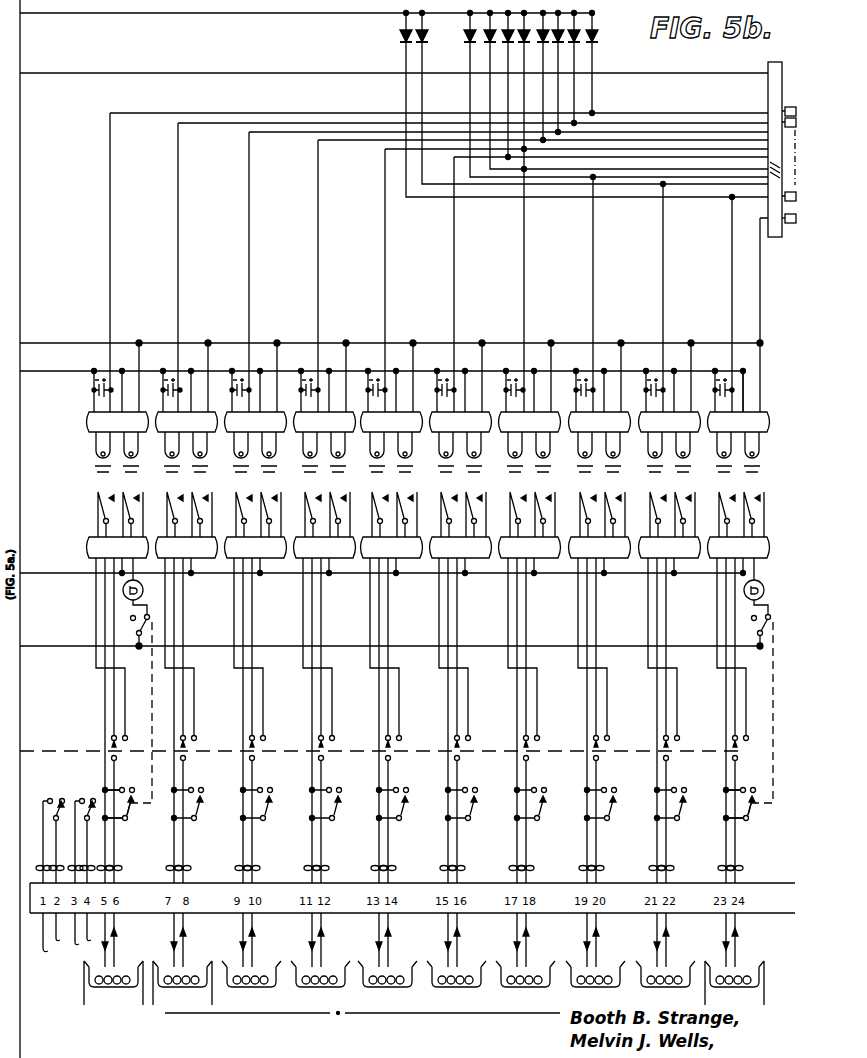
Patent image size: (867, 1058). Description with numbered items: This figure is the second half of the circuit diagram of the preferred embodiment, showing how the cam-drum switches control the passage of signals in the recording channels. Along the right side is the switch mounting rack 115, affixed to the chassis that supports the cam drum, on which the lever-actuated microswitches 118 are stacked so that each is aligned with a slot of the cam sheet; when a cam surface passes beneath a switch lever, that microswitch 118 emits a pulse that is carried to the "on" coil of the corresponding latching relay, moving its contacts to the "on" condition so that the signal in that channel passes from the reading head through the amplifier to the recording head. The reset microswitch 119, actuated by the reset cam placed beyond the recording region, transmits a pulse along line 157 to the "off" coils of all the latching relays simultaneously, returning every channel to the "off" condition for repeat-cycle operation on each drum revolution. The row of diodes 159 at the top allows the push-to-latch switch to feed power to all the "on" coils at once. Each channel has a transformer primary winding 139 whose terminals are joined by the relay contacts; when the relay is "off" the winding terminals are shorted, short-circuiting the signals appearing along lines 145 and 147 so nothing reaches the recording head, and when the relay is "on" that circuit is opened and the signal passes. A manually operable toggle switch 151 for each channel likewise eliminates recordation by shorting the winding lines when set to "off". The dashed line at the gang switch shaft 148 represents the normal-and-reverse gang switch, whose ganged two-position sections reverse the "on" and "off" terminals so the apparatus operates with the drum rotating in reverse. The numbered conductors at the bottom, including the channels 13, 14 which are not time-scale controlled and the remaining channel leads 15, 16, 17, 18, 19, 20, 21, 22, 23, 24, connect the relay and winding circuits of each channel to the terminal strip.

The diodes 159 is at (618, 33).
The switch mounting rack 115 is at (782, 66).
The microswitch 118 is at (791, 107).
The reset microswitch 119 is at (793, 224).
The line 157 is at (745, 343).
The gang switch shaft 148 is at (60, 750).
The toggle switch 151 is at (127, 813).
The primary winding 139 is at (118, 986).
The line 145 is at (84, 1003).
The line 147 is at (143, 1003).
The channel 13 is at (52, 940).
The channel 14 is at (84, 934).
The lead 15 is at (120, 940).
The lead 16 is at (189, 940).
The lead 17 is at (258, 940).
The lead 18 is at (327, 940).
The lead 19 is at (394, 940).
The lead 20 is at (463, 940).
The lead 21 is at (532, 940).
The lead 22 is at (602, 940).
The lead 23 is at (672, 940).
The lead 24 is at (741, 940).